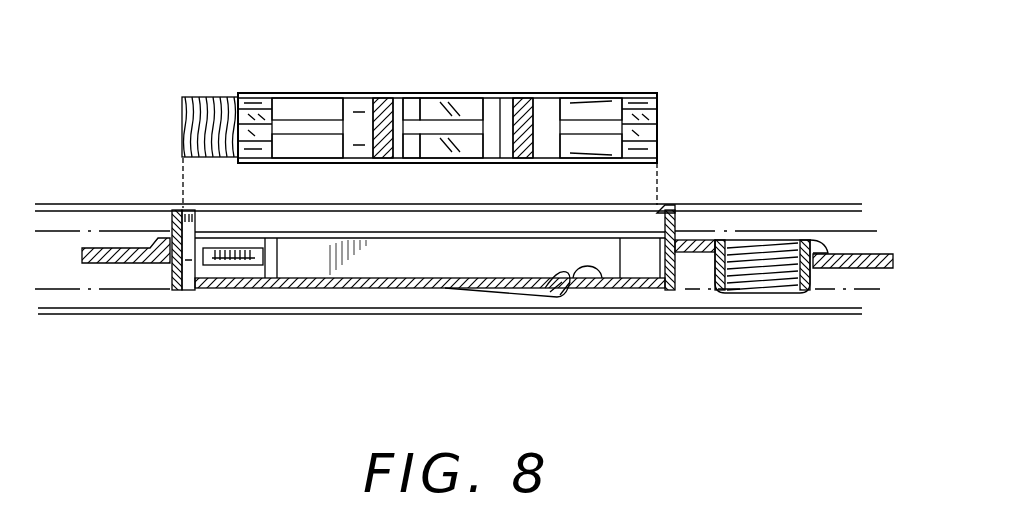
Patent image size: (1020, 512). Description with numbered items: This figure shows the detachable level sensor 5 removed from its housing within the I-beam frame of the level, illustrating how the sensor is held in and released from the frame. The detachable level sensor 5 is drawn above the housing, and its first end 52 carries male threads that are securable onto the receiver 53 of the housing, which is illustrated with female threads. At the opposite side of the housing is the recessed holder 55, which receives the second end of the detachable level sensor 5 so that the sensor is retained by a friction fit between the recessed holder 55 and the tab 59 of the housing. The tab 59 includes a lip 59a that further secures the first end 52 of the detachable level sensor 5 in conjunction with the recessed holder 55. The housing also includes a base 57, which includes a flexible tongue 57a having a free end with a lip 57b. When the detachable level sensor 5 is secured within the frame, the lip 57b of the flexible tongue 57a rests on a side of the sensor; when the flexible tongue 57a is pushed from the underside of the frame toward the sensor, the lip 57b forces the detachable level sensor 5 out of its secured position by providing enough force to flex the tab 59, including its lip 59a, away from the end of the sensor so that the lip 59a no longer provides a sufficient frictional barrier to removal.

The detachable level sensor 5 is at (468, 83).
The first end 52 is at (220, 97).
The receiver 53 is at (783, 247).
The recessed holder 55 is at (195, 212).
The base 57 is at (377, 290).
The flexible tongue 57a is at (533, 297).
The lip 57b is at (603, 288).
The tab 59 is at (678, 229).
The lip 59a is at (663, 204).